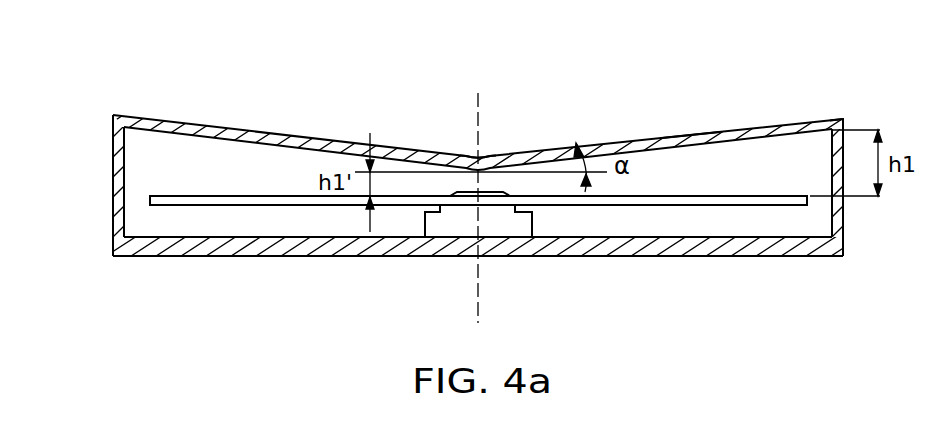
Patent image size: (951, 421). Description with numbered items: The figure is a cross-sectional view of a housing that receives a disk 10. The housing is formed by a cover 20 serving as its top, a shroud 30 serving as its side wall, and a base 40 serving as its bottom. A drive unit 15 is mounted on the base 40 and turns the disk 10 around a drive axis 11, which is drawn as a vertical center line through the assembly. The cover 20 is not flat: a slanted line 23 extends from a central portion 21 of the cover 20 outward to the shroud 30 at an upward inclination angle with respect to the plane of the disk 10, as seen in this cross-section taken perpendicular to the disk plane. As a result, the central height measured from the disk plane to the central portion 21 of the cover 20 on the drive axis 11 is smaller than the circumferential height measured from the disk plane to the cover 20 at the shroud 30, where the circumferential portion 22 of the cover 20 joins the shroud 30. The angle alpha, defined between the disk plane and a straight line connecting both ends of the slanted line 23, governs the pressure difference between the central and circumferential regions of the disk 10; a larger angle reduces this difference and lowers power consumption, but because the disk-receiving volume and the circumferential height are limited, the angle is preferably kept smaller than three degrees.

The disk 10 is at (753, 196).
The drive axis 11 is at (475, 98).
The drive unit 15 is at (448, 232).
The cover 20 is at (197, 128).
The central portion 21 is at (483, 156).
The circumferential portion 22 is at (843, 117).
The slanted line 23 is at (687, 133).
The shroud 30 is at (118, 190).
The base 40 is at (285, 250).